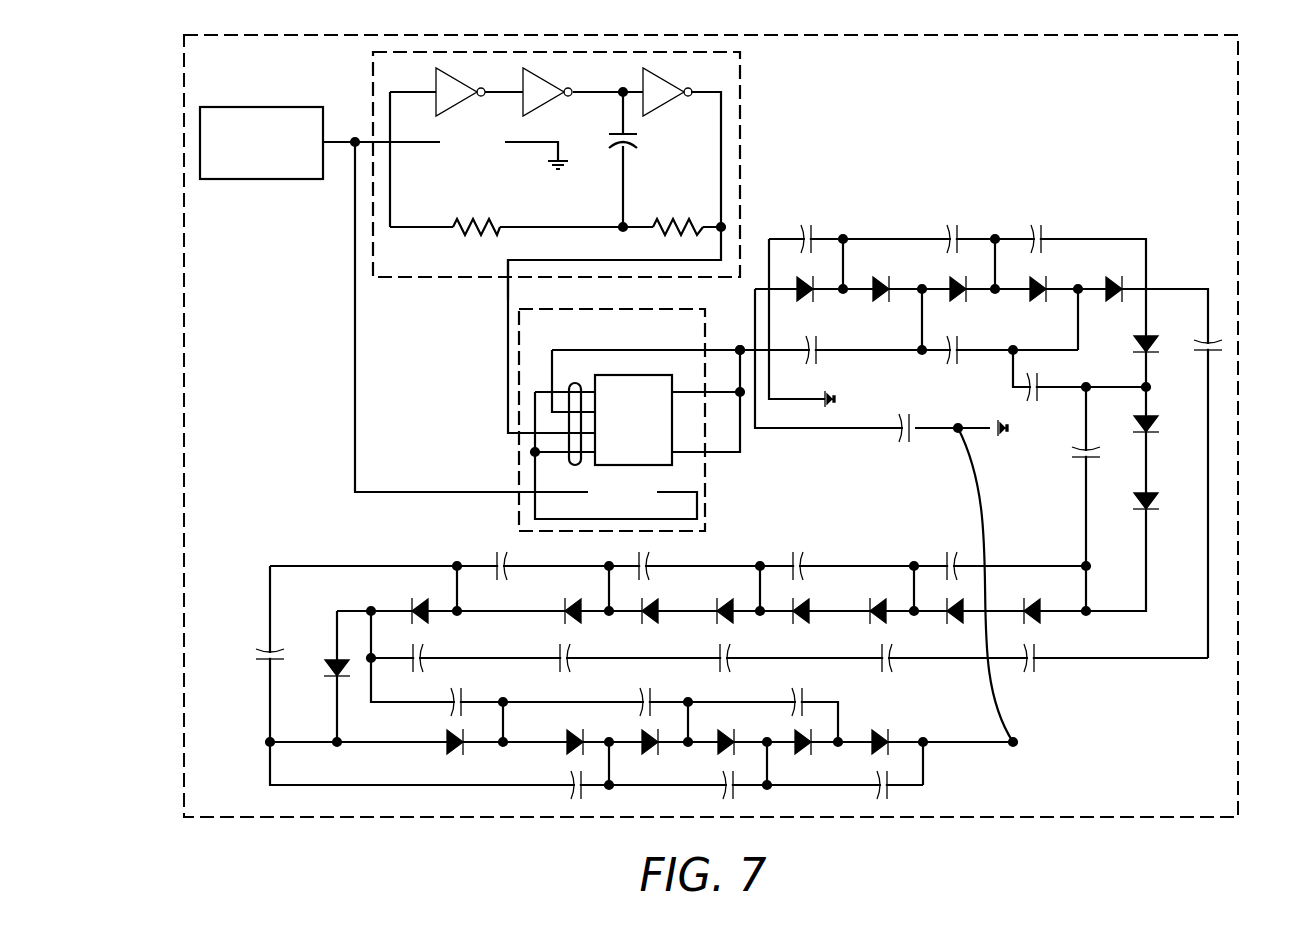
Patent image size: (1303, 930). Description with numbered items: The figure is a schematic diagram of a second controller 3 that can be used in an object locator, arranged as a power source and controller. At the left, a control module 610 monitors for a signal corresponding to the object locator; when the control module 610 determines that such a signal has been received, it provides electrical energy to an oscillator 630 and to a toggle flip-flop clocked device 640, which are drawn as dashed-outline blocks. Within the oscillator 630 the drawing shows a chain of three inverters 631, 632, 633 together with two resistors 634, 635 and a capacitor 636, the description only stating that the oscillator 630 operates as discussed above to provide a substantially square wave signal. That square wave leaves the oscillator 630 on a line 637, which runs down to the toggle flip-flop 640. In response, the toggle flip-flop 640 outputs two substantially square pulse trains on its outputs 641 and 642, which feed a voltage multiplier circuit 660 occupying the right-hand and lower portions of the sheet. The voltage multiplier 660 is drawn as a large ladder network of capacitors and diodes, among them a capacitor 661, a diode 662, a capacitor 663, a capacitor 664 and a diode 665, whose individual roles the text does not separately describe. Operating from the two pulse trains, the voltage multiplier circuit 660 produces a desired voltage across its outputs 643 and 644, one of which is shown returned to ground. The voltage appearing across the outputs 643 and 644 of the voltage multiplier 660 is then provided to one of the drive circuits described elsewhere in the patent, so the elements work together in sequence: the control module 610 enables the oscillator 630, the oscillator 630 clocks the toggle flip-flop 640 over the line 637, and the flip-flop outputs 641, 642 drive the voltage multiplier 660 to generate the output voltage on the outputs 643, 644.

The second controller 3 is at (183, 315).
The control module 610 is at (262, 179).
The oscillator 630 is at (373, 95).
The inverter 631 is at (462, 97).
The inverter 632 is at (550, 70).
The inverter 633 is at (660, 104).
The resistor 634 is at (494, 226).
The resistor 635 is at (676, 212).
The capacitor 636 is at (615, 133).
The line 637 is at (597, 260).
The toggle flip-flop clocked device 640 is at (519, 468).
The output 641 is at (691, 390).
The output 642 is at (741, 449).
The output 643 is at (769, 377).
The output 644 is at (922, 433).
The voltage multiplier circuit 660 is at (1048, 222).
The capacitor 661 is at (908, 413).
The diode 662 is at (878, 730).
The capacitor 663 is at (878, 770).
The capacitor 664 is at (818, 355).
The diode 665 is at (802, 300).